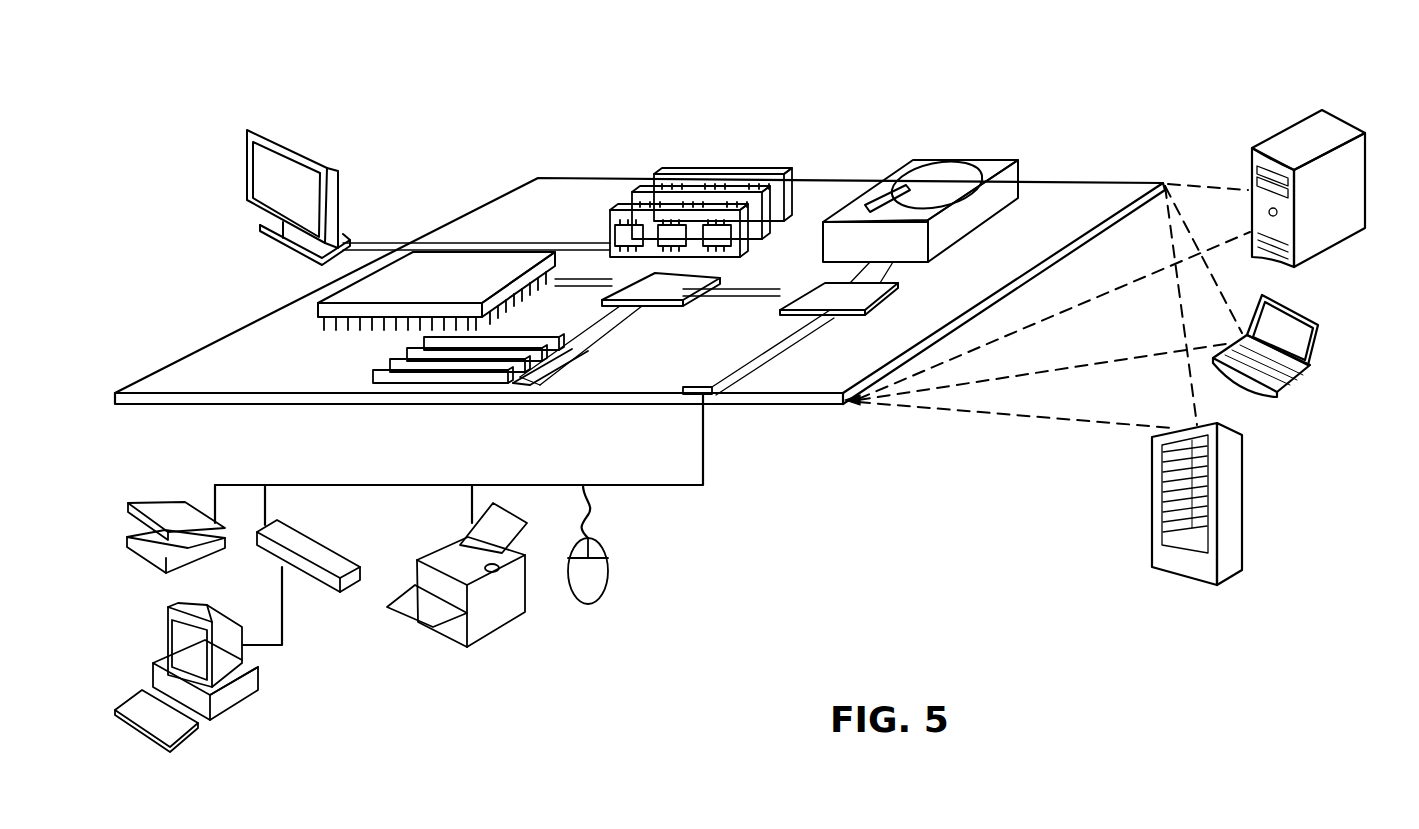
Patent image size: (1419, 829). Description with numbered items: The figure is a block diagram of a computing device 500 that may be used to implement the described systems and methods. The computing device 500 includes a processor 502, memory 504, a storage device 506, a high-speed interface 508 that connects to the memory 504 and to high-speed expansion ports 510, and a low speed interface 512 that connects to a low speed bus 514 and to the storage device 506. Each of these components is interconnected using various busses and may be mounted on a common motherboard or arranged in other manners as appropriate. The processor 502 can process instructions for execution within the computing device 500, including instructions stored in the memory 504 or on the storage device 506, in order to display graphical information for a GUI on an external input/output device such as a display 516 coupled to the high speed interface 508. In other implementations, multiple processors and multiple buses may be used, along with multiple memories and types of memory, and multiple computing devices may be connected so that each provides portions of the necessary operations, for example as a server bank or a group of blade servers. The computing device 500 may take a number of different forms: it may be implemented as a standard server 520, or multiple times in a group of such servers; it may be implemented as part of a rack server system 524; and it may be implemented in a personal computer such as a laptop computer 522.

The computing device 500 is at (452, 150).
The processor 502 is at (324, 308).
The memory 504 is at (673, 170).
The storage device 506 is at (910, 160).
The high-speed interface 508 is at (640, 290).
The high-speed expansion ports 510 is at (403, 365).
The low speed interface 512 is at (823, 292).
The low speed bus 514 is at (717, 398).
The display 516 is at (249, 128).
The standard server 520 is at (1252, 164).
The laptop computer 522 is at (1272, 397).
The rack server system 524 is at (1152, 528).